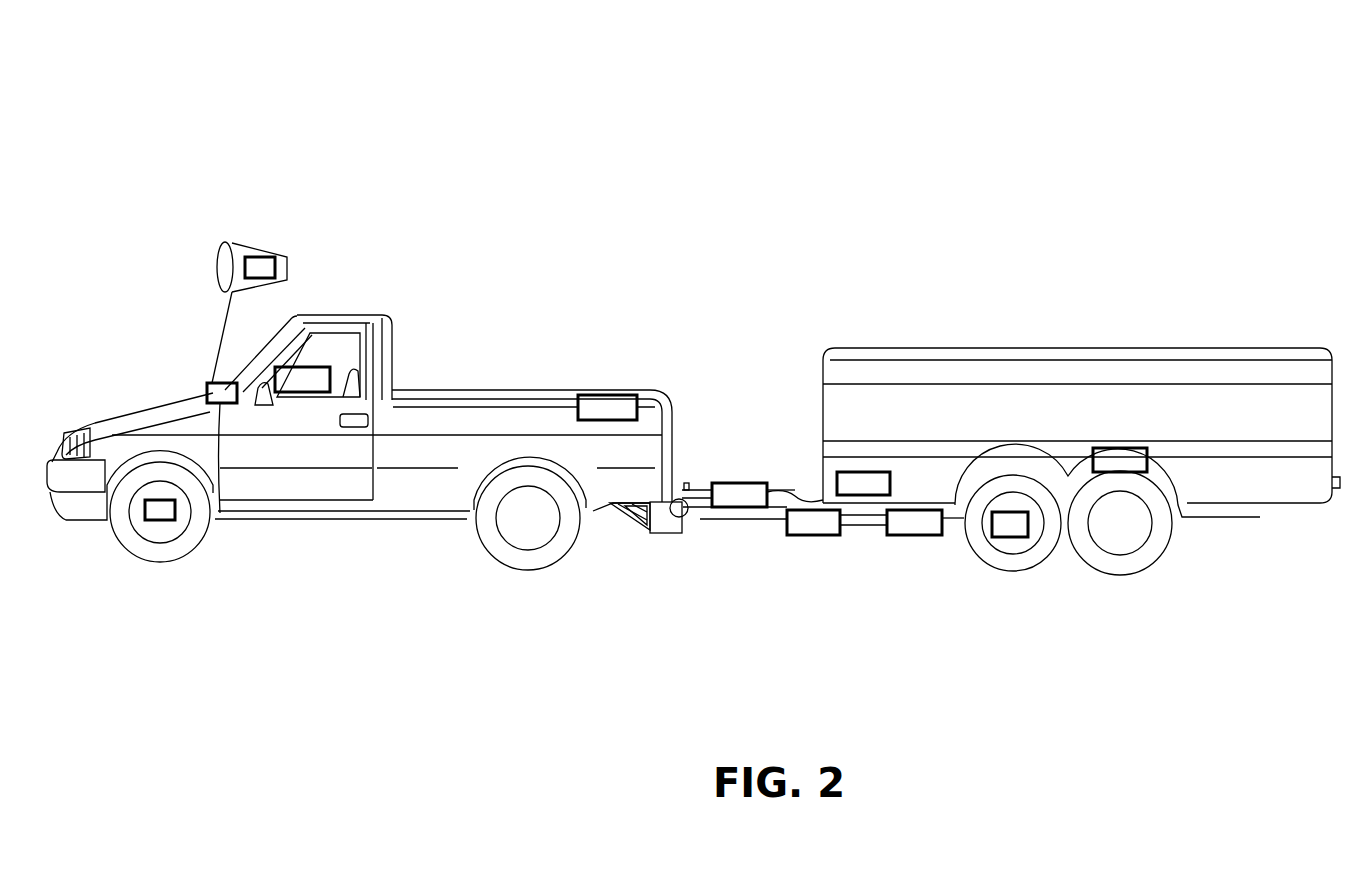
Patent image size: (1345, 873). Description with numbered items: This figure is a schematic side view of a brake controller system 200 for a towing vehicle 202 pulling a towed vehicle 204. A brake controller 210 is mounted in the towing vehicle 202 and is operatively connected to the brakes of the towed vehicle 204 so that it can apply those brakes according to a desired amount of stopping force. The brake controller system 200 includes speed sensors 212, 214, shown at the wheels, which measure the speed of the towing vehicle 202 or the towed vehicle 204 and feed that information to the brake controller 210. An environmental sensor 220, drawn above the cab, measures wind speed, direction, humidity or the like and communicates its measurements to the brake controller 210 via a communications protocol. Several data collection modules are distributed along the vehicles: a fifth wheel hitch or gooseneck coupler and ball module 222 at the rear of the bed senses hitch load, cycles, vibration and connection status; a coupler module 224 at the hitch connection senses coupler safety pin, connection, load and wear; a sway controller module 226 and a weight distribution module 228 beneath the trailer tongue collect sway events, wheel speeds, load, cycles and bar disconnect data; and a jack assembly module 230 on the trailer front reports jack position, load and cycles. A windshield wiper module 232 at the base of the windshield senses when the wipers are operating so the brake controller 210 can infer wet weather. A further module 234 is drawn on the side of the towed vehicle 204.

The brake controller system 200 is at (920, 88).
The towing vehicle 202 is at (432, 318).
The towed vehicle 204 is at (1212, 338).
The brake controller 210 is at (280, 368).
The speed sensor 212 is at (157, 517).
The speed sensor 214 is at (1012, 533).
The environmental sensor 220 is at (260, 265).
The fifth wheel hitch or gooseneck coupler and ball module 222 is at (608, 408).
The coupler module 224 is at (738, 492).
The sway controller module 226 is at (807, 537).
The weight distribution module 228 is at (905, 537).
The jack assembly module 230 is at (858, 474).
The windshield wiper module 232 is at (215, 390).
The trailer side sensor 234 is at (1110, 448).